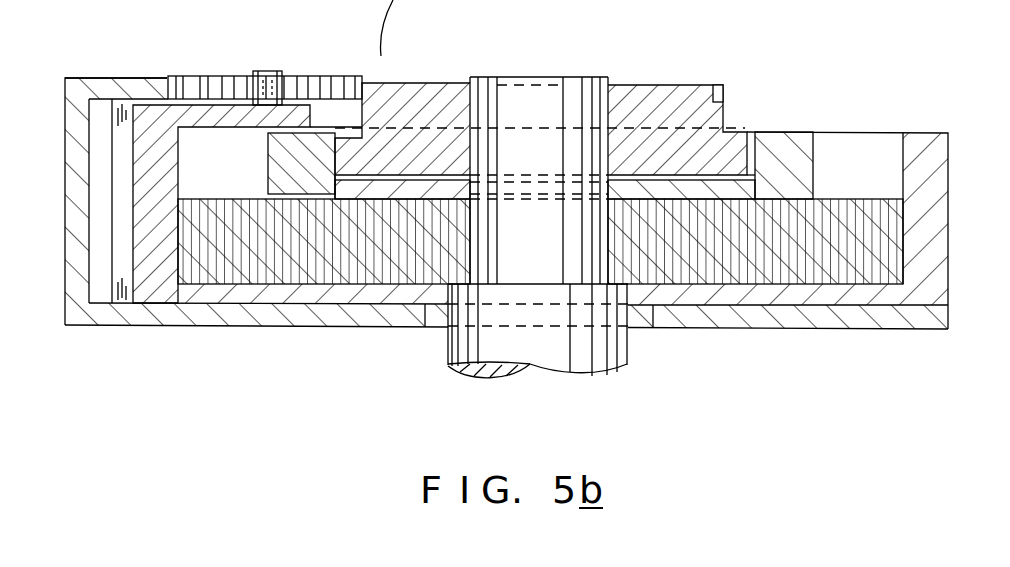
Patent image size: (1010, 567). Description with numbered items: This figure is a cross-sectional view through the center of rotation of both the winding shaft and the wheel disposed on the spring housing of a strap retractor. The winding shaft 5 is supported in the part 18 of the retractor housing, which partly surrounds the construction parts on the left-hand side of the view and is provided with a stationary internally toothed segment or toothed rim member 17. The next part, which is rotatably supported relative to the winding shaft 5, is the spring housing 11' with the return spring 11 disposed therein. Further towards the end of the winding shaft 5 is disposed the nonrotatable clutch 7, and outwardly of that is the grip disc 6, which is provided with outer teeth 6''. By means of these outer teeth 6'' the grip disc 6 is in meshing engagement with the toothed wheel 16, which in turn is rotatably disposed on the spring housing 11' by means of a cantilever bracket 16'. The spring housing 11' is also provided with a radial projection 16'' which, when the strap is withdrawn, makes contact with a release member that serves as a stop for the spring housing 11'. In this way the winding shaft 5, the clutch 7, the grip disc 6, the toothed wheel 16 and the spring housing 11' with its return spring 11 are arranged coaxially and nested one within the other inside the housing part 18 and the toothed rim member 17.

The winding shaft 5 is at (537, 96).
The grip disc 6 is at (369, 116).
The outer teeth 6'' is at (697, 116).
The nonrotatable clutch 7 is at (778, 150).
The return spring 11 is at (587, 241).
The spring housing 11' is at (593, 224).
The toothed wheel 16 is at (225, 68).
The bracket 16' is at (211, 201).
The radial projection 16'' is at (93, 201).
The toothed rim member 17 is at (153, 88).
The part of retractor housing 18 is at (765, 321).